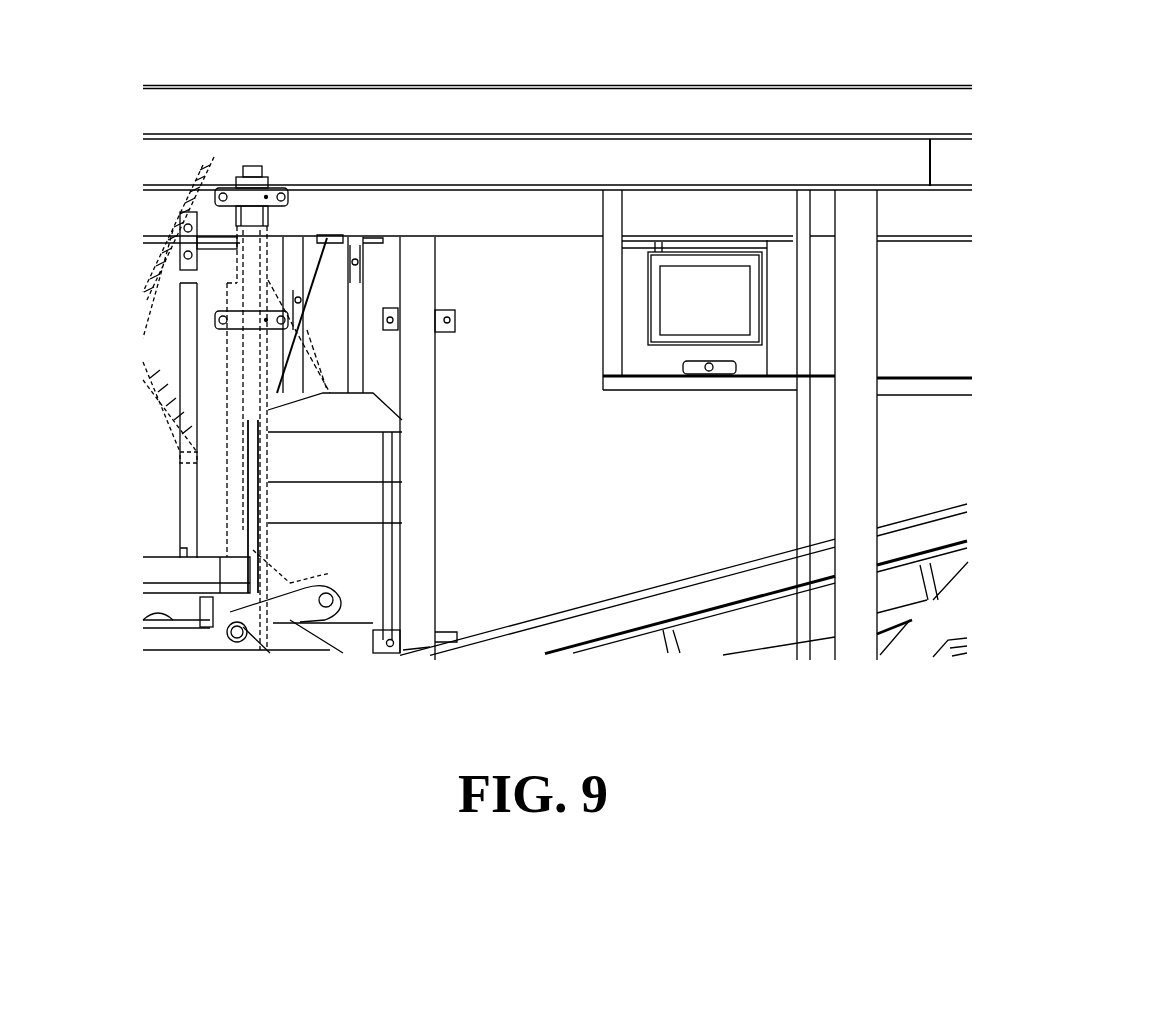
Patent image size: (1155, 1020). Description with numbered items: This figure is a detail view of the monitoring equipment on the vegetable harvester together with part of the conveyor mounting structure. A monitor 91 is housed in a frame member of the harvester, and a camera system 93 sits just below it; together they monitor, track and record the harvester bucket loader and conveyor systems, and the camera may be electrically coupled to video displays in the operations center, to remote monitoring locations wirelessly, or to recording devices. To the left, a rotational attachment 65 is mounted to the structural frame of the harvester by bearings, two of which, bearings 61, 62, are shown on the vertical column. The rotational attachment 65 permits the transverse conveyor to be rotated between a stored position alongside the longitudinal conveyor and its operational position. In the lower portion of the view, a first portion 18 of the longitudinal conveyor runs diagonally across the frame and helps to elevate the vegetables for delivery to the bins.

The first portion of the longitudinal conveyor 18 is at (800, 577).
The bearing 61 is at (205, 343).
The bearing 62 is at (218, 183).
The rotational attachment 65 is at (230, 538).
The monitor 91 is at (740, 297).
The camera system 93 is at (770, 368).